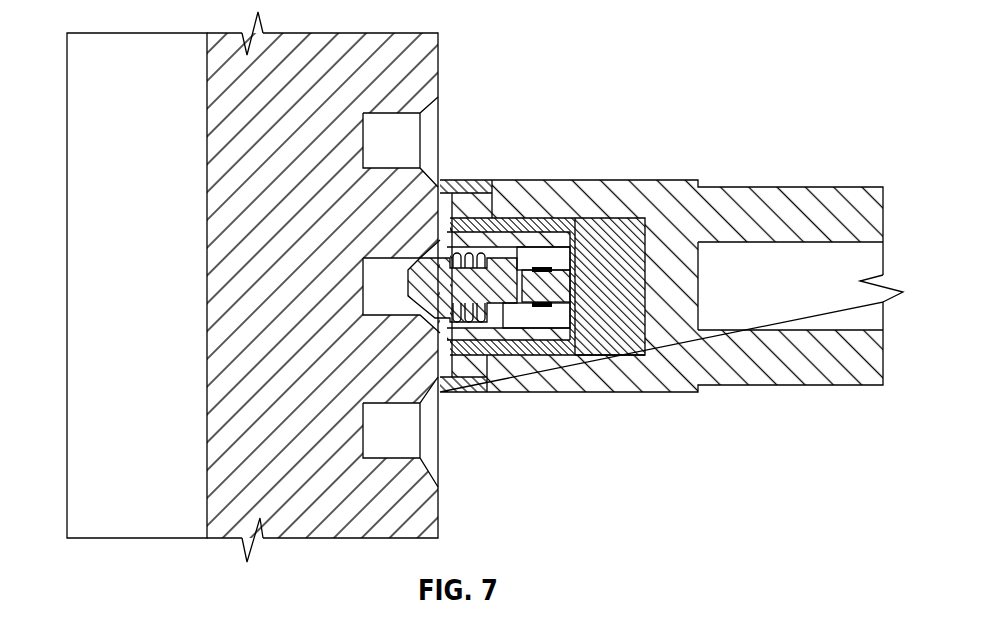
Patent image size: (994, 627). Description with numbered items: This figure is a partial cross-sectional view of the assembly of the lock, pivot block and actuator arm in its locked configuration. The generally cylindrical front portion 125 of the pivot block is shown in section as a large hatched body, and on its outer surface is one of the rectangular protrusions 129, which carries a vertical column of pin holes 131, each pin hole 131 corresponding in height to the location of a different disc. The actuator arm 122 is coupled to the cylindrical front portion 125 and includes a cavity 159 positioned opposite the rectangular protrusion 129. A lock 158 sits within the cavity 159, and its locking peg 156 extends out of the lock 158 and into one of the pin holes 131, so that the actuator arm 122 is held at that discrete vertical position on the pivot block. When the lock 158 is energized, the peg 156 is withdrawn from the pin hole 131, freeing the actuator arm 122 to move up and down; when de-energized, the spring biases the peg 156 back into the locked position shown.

The actuator arm 122 is at (642, 207).
The cylindrical front portion 125 is at (226, 549).
The rectangular protrusion 129 is at (368, 33).
The pin hole 131 is at (426, 122).
The locking peg 156 is at (500, 285).
The lock 158 is at (623, 346).
The cavity 159 is at (645, 240).